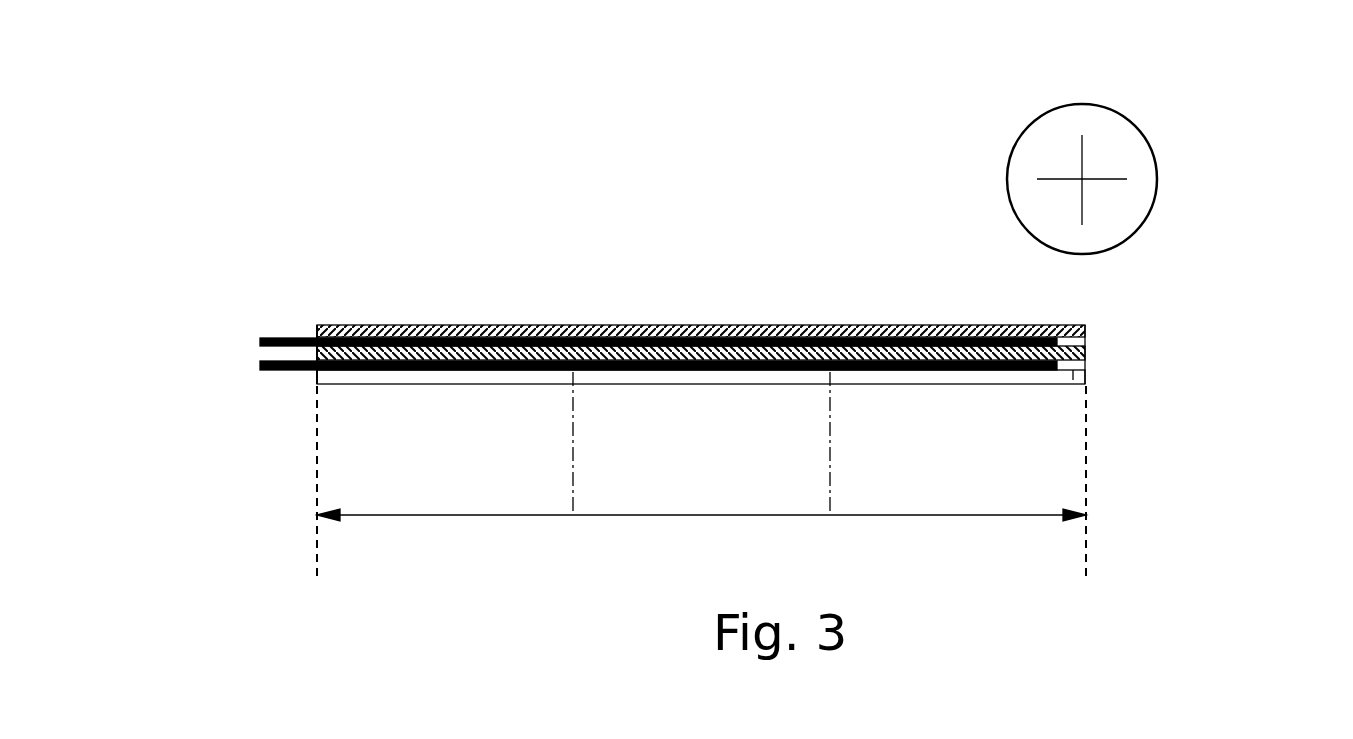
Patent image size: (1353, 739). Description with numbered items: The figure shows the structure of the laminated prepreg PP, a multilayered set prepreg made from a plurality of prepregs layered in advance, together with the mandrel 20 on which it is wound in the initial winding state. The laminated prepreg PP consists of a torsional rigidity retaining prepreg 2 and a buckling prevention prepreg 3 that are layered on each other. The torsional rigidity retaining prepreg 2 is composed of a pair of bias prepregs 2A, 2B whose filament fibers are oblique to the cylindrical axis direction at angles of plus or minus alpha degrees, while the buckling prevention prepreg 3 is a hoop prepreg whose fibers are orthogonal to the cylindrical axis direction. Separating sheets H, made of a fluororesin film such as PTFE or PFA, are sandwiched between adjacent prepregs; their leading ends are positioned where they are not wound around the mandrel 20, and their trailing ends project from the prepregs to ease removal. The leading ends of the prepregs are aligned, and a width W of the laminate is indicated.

The mandrel 20 is at (1110, 132).
The bias prepreg 2A is at (1085, 330).
The bias prepreg 2B is at (1085, 352).
The torsional rigidity retaining prepreg 2 is at (801, 319).
The buckling prevention prepreg 3 is at (1085, 375).
The laminated prepreg PP is at (752, 336).
The separating sheet H is at (258, 343).
The width dimension W is at (701, 474).